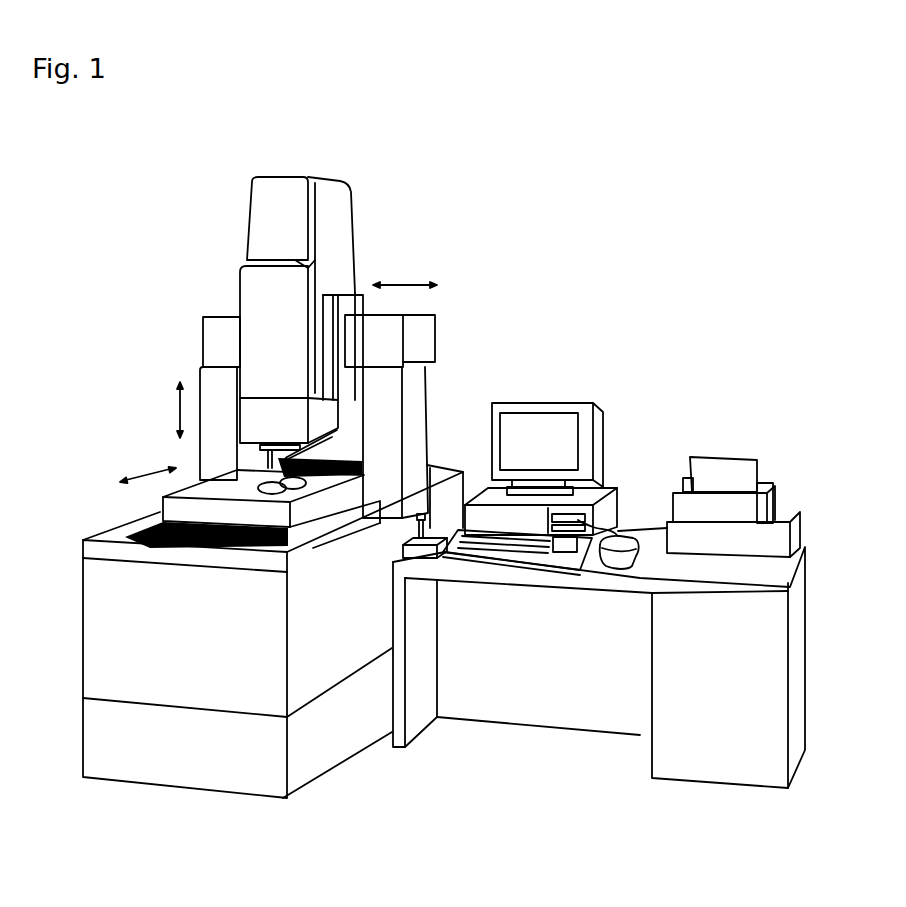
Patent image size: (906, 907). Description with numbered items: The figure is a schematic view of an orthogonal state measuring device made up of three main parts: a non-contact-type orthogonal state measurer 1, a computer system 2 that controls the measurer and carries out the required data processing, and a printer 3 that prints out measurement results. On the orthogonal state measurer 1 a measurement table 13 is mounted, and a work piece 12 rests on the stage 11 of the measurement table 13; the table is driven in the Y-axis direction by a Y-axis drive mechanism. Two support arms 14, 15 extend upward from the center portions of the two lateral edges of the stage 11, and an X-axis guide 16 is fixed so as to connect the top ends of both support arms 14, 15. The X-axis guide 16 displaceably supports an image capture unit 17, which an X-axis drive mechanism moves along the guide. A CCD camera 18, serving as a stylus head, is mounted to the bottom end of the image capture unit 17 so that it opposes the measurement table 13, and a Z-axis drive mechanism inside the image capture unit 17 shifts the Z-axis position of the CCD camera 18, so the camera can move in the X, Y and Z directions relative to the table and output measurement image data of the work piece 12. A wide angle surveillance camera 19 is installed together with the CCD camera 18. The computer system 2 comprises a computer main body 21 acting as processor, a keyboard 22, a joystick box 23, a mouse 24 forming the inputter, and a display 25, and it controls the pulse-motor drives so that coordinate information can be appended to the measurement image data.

The orthogonal state measurer 1 is at (366, 203).
The computer system 2 is at (600, 392).
The printer 3 is at (745, 440).
The stage 11 is at (128, 522).
The work piece 12 is at (293, 488).
The measurement table 13 is at (233, 477).
The support arm 14 is at (198, 380).
The support arm 15 is at (418, 410).
The X-axis guide 16 is at (220, 316).
The image capture unit 17 is at (252, 211).
The CCD camera 18 is at (307, 452).
The wide angle surveillance camera 19 is at (330, 416).
The computer main body 21 is at (600, 488).
The keyboard 22 is at (520, 560).
The joystick box 23 is at (420, 542).
The mouse 24 is at (610, 556).
The display 25 is at (597, 437).